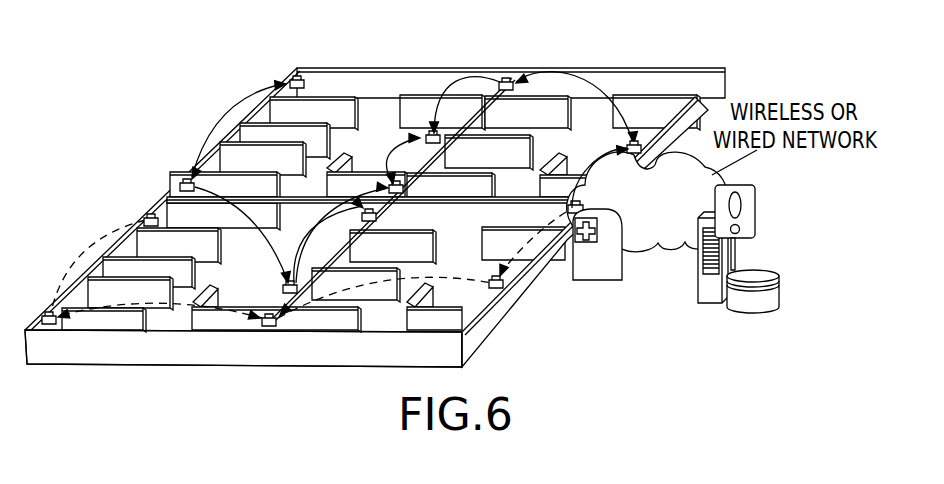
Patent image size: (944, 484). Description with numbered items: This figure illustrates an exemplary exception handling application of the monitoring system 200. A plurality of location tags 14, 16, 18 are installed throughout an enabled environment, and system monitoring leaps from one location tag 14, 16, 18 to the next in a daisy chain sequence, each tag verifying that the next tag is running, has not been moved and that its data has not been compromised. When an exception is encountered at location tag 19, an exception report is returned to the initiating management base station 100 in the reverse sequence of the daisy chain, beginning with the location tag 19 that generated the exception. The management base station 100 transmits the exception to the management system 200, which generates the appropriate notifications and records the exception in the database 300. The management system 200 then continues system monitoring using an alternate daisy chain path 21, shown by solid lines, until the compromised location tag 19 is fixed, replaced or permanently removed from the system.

The location tag 14 is at (634, 141).
The location tag 16 is at (508, 78).
The location tag 18 is at (297, 76).
The location tag 19 is at (146, 216).
The alternate daisy chain path 21 is at (238, 108).
The management base station 100 is at (568, 214).
The management system 200 is at (682, 402).
The database 300 is at (698, 280).